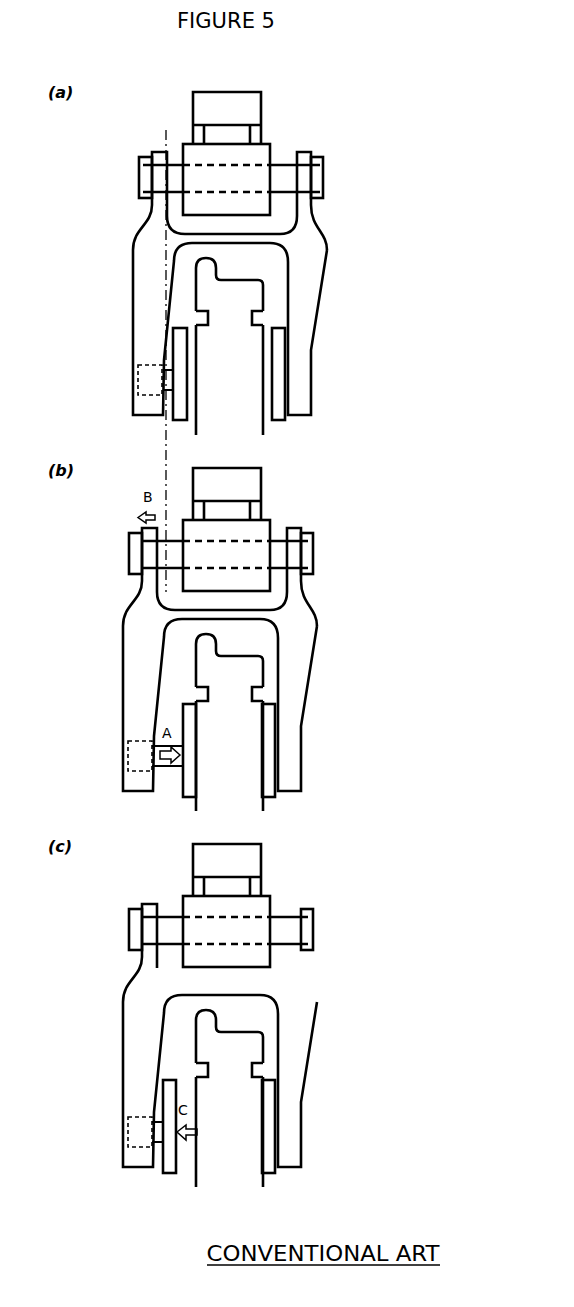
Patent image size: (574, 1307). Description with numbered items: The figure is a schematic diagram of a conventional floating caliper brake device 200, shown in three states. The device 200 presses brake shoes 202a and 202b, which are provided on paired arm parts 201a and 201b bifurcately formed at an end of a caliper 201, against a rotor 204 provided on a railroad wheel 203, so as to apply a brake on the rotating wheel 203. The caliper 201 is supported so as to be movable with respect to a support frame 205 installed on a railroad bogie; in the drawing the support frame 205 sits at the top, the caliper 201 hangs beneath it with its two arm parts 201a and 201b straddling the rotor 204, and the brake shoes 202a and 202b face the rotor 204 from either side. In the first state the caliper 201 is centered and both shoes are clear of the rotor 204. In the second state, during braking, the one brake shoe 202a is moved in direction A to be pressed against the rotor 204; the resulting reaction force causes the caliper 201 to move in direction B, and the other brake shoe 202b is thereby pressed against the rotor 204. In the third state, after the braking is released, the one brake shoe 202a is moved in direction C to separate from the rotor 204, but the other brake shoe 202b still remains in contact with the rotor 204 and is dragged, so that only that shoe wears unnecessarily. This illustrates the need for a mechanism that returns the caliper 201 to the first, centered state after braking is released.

The floating caliper brake device 200 is at (103, 166).
The caliper 201 is at (113, 251).
The arm part 201a is at (132, 339).
The arm part 201b is at (313, 325).
The brake shoe 202a is at (180, 421).
The brake shoe 202b is at (279, 421).
The railroad wheel 203 is at (243, 280).
The rotor 204 is at (254, 317).
The support frame 205 is at (277, 133).